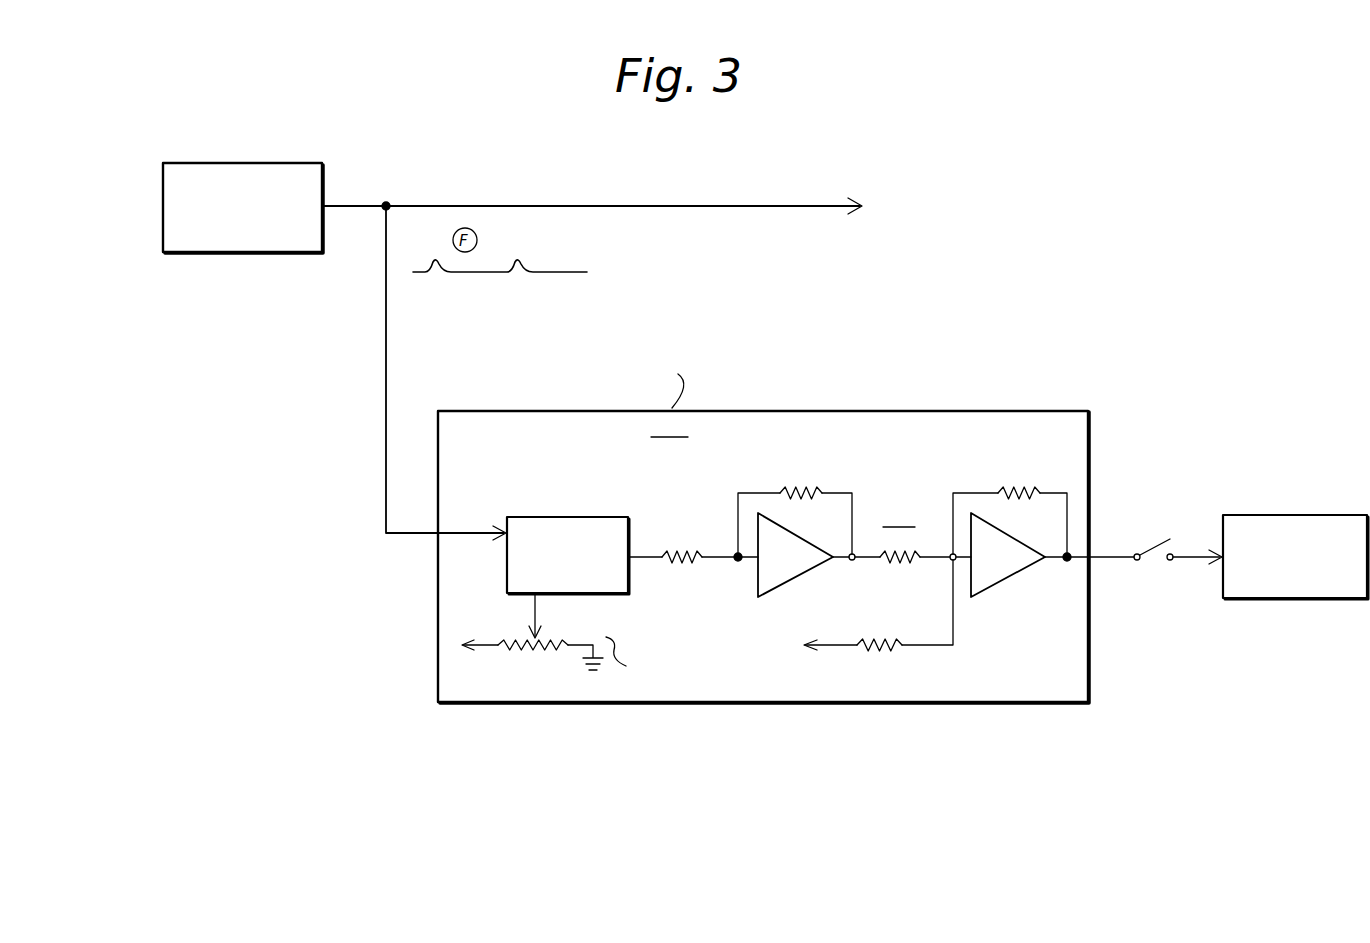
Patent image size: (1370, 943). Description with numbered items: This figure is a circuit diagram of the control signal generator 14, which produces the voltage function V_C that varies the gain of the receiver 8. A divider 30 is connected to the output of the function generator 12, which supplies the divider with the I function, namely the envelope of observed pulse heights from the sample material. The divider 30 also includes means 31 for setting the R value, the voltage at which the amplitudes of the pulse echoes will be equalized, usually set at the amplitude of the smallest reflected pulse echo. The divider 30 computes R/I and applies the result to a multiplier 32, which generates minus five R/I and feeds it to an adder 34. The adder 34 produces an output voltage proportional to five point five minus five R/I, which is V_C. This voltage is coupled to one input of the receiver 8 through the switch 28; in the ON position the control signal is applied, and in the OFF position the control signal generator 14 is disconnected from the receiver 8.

The function generator 12 is at (265, 162).
The control signal generator 14 is at (786, 525).
The divider 30 is at (590, 517).
The means for setting the R value 31 is at (543, 612).
The multiplier 32 is at (804, 568).
The adder 34 is at (1010, 580).
The switch 28 is at (1150, 553).
The receiver 8 is at (1305, 514).